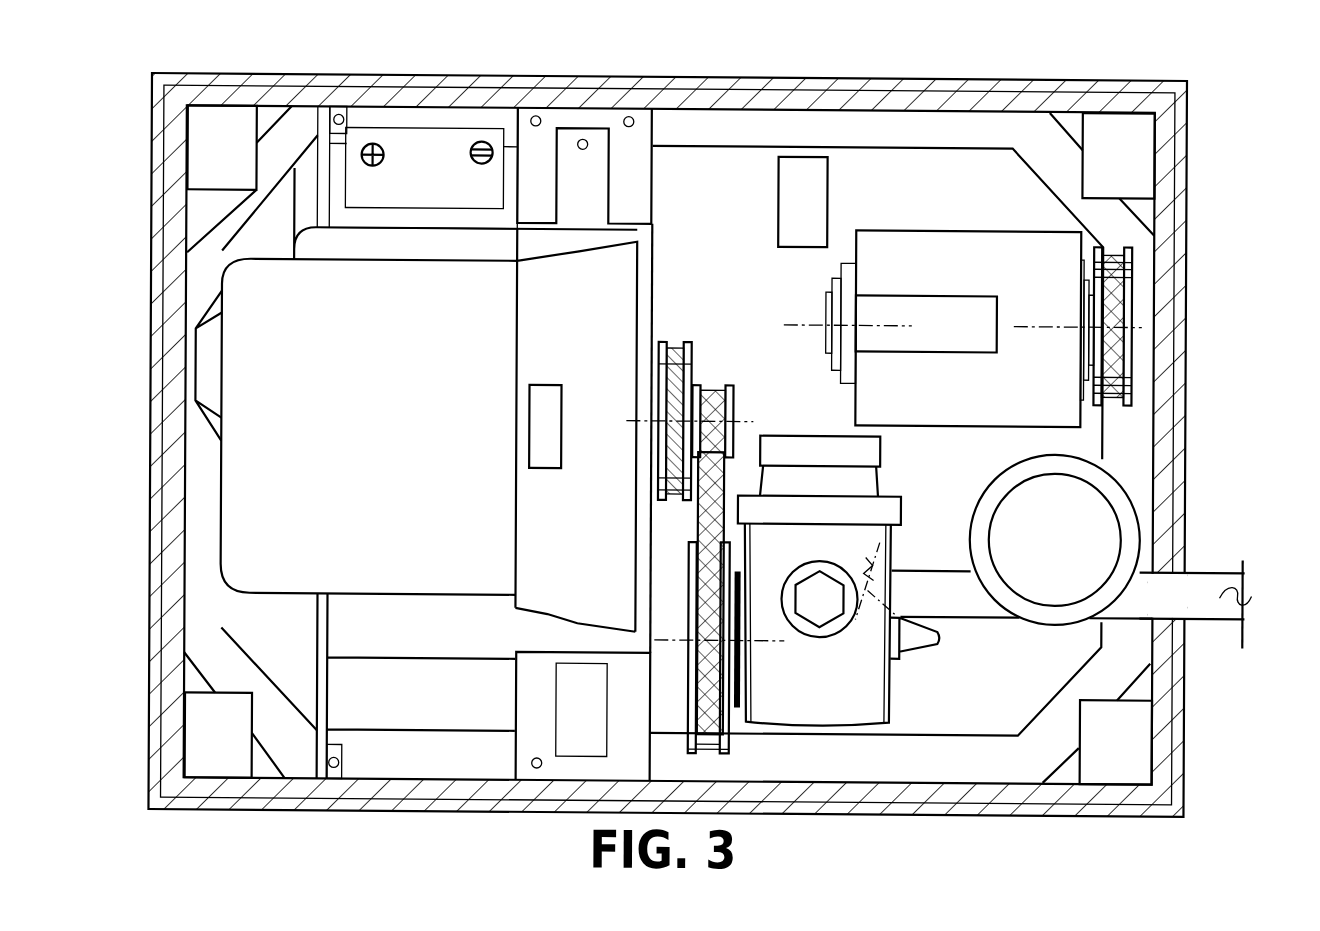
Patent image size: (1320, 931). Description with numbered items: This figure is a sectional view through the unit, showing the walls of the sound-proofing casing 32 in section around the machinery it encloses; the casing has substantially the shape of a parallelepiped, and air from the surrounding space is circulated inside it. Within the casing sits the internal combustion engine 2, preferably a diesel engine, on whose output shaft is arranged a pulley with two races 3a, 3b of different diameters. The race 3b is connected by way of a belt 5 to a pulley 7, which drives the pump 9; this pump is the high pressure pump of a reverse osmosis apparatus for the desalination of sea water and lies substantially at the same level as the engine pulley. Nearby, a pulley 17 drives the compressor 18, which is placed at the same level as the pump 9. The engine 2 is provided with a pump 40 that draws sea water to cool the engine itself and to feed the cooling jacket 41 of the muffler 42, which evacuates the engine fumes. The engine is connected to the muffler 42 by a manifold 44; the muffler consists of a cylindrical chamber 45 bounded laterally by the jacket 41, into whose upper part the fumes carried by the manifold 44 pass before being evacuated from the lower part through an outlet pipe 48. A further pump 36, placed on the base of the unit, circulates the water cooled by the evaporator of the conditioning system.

The internal combustion engine 2 is at (386, 412).
The race 3a is at (692, 338).
The race 3b is at (732, 381).
The belt 5 is at (714, 496).
The pulley 7 is at (692, 647).
The pump 9 is at (838, 688).
The pulley 17 is at (1137, 305).
The compressor 18 is at (954, 268).
The sound-proofing casing 32 is at (888, 74).
The pump 36 is at (800, 182).
The pump 40 is at (549, 394).
The cooling jacket 41 is at (1132, 520).
The muffler 42 is at (1016, 654).
The manifold 44 is at (932, 580).
The cylindrical chamber 45 is at (1074, 547).
The outlet pipe 48 is at (1254, 585).